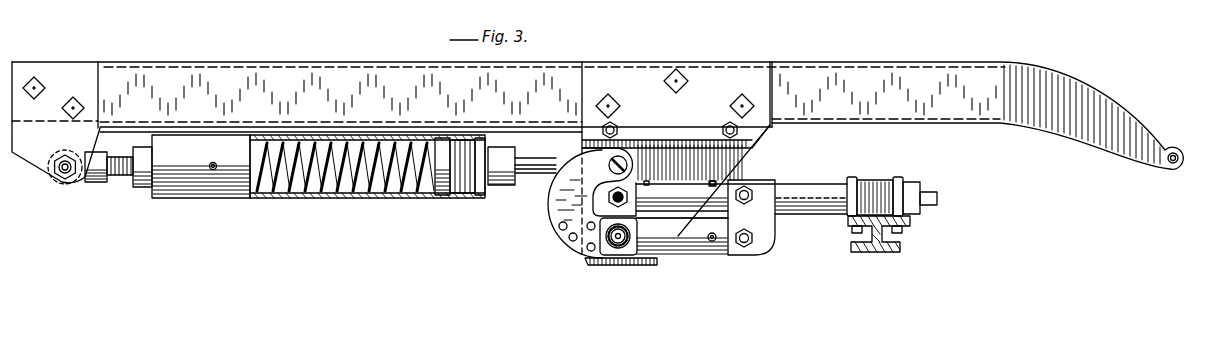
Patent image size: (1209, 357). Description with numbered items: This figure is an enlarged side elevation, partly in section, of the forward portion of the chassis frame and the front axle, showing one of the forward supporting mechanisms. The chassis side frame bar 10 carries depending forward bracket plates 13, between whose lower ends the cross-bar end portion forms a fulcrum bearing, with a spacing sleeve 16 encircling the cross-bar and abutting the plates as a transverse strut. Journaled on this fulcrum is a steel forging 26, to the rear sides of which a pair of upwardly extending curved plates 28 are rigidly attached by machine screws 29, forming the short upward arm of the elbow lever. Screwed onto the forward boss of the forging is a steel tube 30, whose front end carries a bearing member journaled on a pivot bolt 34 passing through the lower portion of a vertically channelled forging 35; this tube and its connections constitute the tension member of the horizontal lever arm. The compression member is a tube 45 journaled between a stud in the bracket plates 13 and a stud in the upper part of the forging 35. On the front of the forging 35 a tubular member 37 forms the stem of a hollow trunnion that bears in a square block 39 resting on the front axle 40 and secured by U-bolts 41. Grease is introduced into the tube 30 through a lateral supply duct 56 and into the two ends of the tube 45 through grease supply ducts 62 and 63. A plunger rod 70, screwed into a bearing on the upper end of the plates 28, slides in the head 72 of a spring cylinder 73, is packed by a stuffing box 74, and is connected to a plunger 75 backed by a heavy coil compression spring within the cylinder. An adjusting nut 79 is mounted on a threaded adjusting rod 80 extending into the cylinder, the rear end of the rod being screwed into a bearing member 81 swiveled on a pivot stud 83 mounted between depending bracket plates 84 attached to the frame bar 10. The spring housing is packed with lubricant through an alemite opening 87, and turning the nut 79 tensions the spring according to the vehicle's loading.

The chassis side frame bar 10 is at (292, 78).
The forward bracket plates 13 is at (633, 113).
The spacing sleeve 16 is at (320, 197).
The steel forging 26 is at (598, 265).
The curved plates 28 is at (560, 208).
The machine screws 29 is at (586, 248).
The steel tube 30 is at (648, 266).
The pivot bolt 34 is at (750, 246).
The vertically channelled forging 35 is at (768, 188).
The tubular member 37 is at (847, 180).
The square block 39 is at (885, 178).
The front axle 40 is at (876, 253).
The U-bolts 41 is at (906, 183).
The tube 45 is at (690, 240).
The lateral supply duct 56 is at (712, 242).
The grease supply duct 62 is at (668, 181).
The grease supply duct 63 is at (714, 185).
The plunger rod 70 is at (541, 158).
The head of spring cylinder 72 is at (485, 137).
The spring cylinder 73 is at (370, 197).
The stuffing box 74 is at (466, 196).
The plunger 75 is at (440, 197).
The adjusting nut 79 is at (142, 189).
The threaded adjusting rod 80 is at (120, 177).
The bearing member 81 is at (92, 184).
The pivot stud 83 is at (62, 181).
The depending bracket plates 84 is at (88, 90).
The alemite opening 87 is at (213, 170).